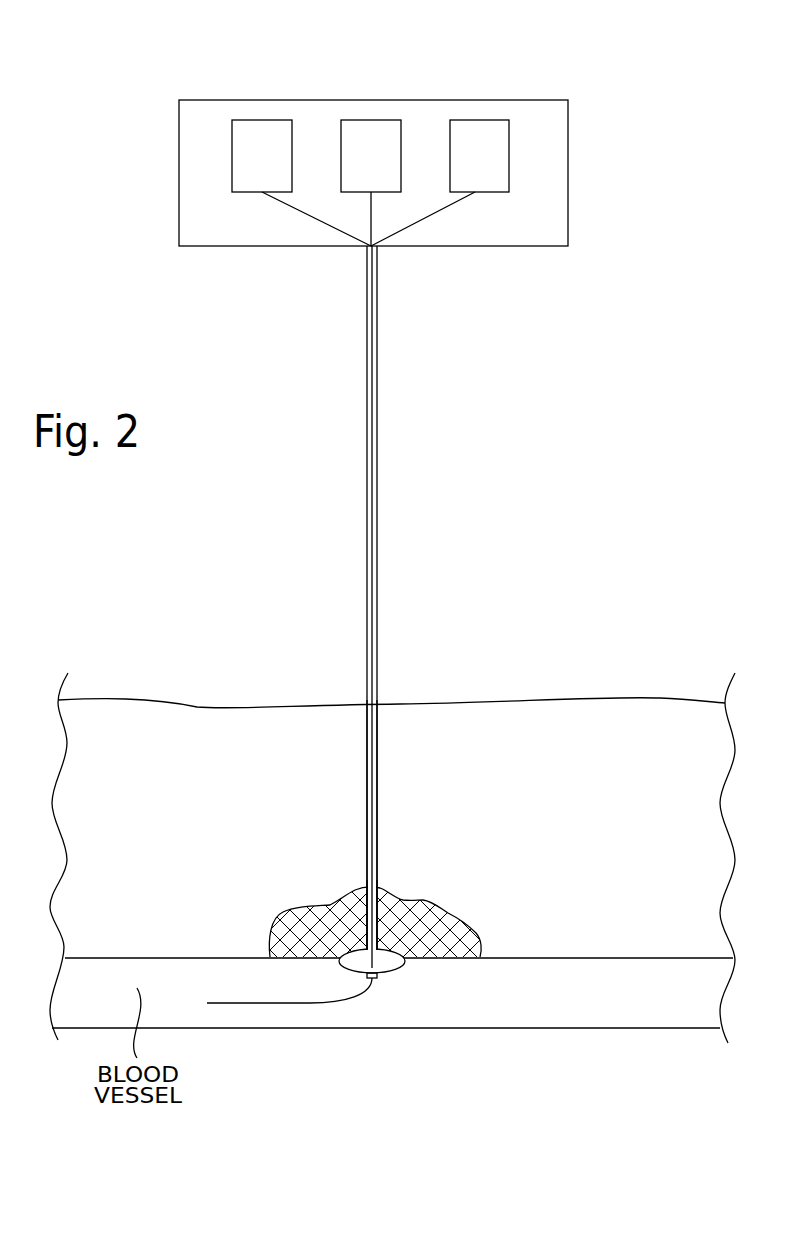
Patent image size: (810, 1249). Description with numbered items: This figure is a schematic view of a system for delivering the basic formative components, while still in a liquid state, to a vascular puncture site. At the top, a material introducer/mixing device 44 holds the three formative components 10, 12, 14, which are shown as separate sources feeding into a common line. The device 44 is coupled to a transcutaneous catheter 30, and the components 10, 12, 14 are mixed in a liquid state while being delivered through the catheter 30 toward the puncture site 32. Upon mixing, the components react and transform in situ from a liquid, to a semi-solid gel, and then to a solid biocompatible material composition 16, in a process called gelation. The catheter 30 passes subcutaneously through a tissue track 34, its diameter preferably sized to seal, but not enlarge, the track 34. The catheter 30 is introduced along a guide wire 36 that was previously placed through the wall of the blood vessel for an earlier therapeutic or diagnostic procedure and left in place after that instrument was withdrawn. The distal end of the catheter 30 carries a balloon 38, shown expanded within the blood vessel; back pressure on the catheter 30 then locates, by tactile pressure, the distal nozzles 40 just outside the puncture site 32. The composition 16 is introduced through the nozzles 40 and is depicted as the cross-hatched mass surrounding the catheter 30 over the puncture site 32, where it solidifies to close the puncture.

The formative component 10 is at (252, 127).
The formative component 12 is at (368, 127).
The formative component 14 is at (482, 127).
The material introducer/mixing device 44 is at (548, 98).
The transcutaneous catheter 30 is at (378, 443).
The tissue track 34 is at (378, 745).
The biocompatible material composition 16 is at (338, 918).
The distal nozzles 40 is at (378, 887).
The puncture site 32 is at (430, 922).
The balloon 38 is at (392, 972).
The guide wire 36 is at (268, 1005).